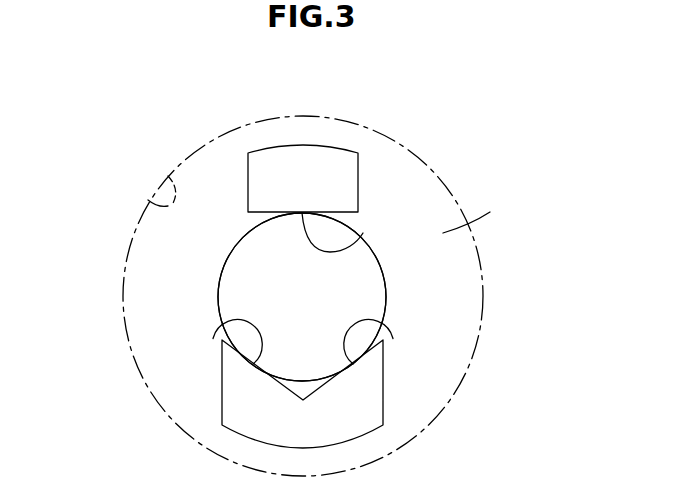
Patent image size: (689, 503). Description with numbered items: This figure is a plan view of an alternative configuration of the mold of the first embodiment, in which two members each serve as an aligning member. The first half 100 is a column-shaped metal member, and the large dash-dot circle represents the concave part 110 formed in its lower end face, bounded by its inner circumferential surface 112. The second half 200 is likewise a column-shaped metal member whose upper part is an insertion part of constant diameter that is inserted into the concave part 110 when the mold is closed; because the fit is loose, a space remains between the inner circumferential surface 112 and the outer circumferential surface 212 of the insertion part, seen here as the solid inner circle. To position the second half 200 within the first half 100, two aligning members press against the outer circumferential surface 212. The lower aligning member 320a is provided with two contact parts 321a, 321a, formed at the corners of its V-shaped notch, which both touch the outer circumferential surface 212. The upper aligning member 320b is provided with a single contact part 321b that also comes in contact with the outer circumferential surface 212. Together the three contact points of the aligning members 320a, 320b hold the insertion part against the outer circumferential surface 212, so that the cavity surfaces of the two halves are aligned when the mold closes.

The first half 100 is at (192, 118).
The concave part 110 is at (490, 212).
The inner circumferential surface 112 is at (168, 175).
The second half 200 is at (388, 289).
The outer circumferential surface 212 is at (218, 297).
The aligning member 320a is at (383, 394).
The aligning member 320b is at (343, 165).
The contact part 321a is at (213, 338).
The contact part 321b is at (363, 233).